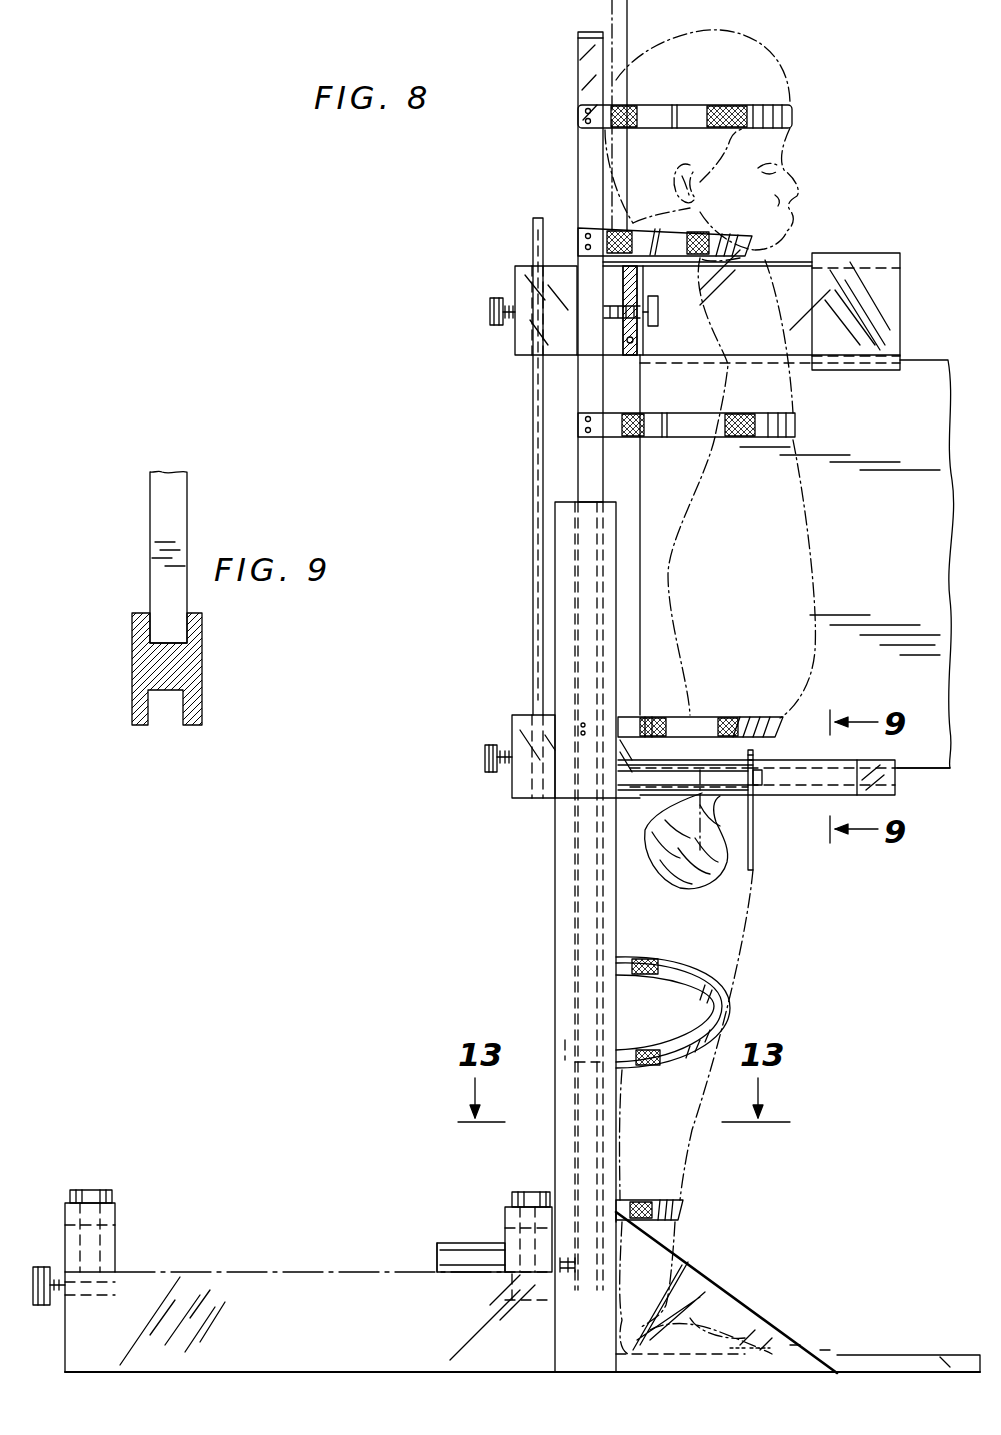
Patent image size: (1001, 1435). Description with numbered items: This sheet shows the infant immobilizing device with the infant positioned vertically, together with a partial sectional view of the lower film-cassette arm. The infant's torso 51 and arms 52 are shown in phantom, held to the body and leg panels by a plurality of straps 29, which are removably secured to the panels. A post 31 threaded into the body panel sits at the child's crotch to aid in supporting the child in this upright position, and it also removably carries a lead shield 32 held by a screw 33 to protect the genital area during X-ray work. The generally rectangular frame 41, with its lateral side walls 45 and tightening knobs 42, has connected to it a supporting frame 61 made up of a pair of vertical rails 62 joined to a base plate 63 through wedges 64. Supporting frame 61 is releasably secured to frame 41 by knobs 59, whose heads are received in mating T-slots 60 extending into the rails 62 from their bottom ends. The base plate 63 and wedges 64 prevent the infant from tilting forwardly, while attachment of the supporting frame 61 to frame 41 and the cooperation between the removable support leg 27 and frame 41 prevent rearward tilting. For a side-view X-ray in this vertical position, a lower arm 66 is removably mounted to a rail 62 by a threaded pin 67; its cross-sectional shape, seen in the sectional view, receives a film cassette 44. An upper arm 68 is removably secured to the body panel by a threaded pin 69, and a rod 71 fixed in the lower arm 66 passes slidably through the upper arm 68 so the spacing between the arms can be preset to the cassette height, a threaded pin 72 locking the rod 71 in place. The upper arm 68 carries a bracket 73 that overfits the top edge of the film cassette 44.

In FIG. 8, the removable support leg 27 is at (446, 1246).
In FIG. 8, the strap 29 is at (794, 118).
In FIG. 8, the post 31 is at (755, 790).
In FIG. 8, the lead shield 32 is at (752, 872).
In FIG. 8, the screw 33 is at (757, 775).
In FIG. 8, the frame 41 is at (392, 1272).
In FIG. 8, the knob 42 is at (114, 1192).
In FIG. 8, the film cassette 44 is at (885, 561).
In FIG. 9, the film cassette 44 is at (153, 538).
In FIG. 8, the lateral side wall 45 is at (118, 1337).
In FIG. 8, the infant's torso 51 is at (814, 670).
In FIG. 8, the arms 52 is at (688, 673).
In FIG. 8, the knob 59 is at (42, 1267).
In FIG. 8, the T-slot 60 is at (660, 1337).
In FIG. 8, the supporting frame 61 is at (812, 1350).
In FIG. 8, the vertical rail 62 is at (556, 962).
In FIG. 8, the base plate 63 is at (898, 1356).
In FIG. 8, the wedge 64 is at (716, 1298).
In FIG. 8, the lower arm 66 is at (515, 798).
In FIG. 9, the lower arm 66 is at (205, 700).
In FIG. 8, the threaded pin 67 is at (490, 773).
In FIG. 8, the upper arm 68 is at (520, 270).
In FIG. 8, the threaded pin 69 is at (655, 318).
In FIG. 8, the rod 71 is at (532, 670).
In FIG. 8, the threaded pin 72 is at (490, 312).
In FIG. 8, the bracket 73 is at (890, 320).